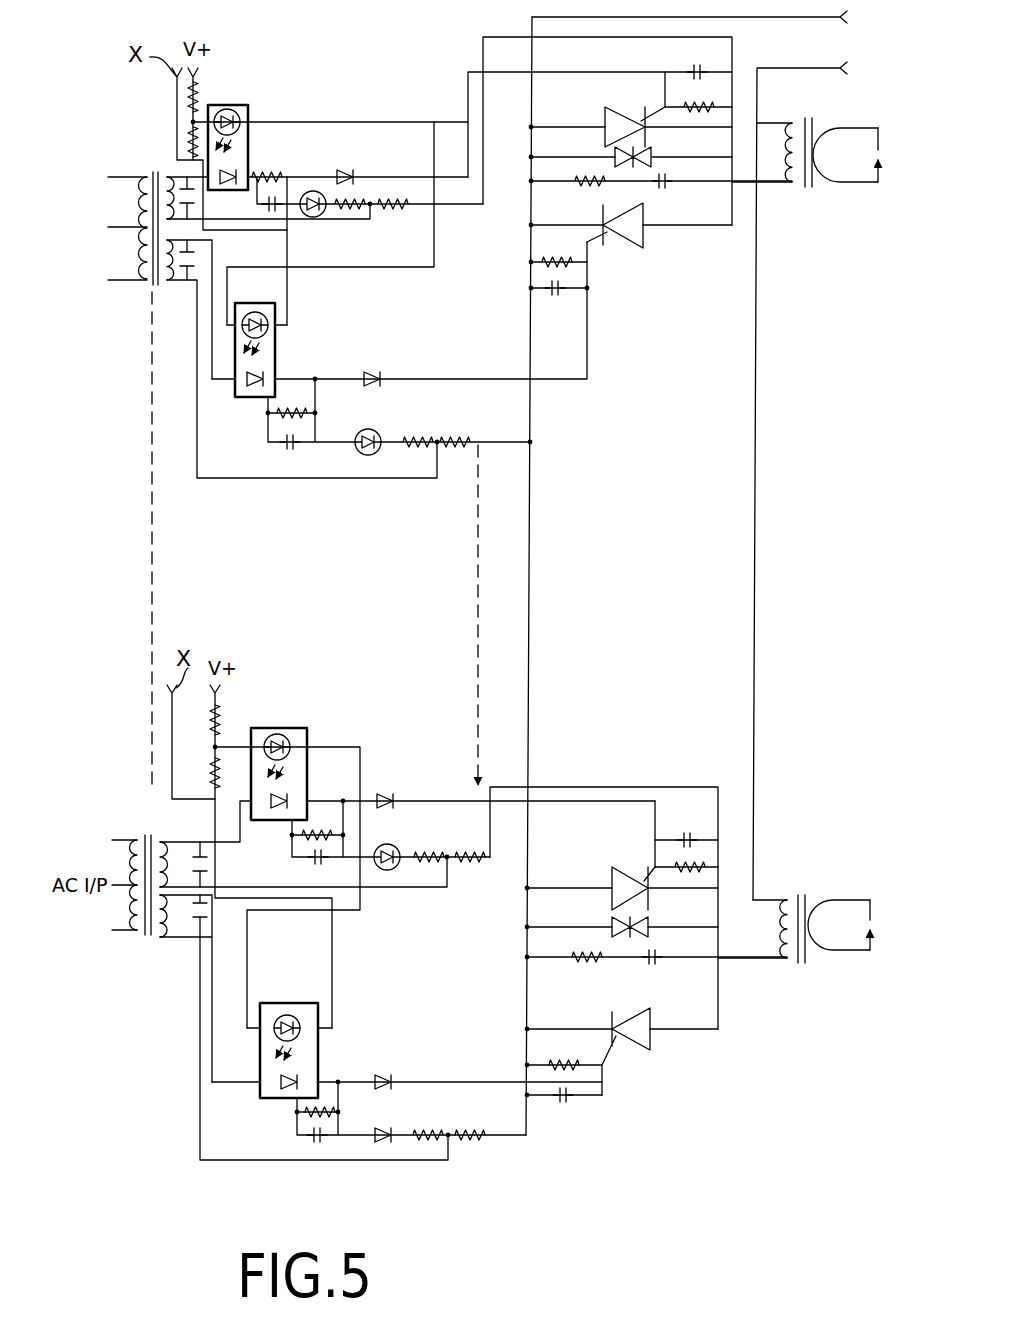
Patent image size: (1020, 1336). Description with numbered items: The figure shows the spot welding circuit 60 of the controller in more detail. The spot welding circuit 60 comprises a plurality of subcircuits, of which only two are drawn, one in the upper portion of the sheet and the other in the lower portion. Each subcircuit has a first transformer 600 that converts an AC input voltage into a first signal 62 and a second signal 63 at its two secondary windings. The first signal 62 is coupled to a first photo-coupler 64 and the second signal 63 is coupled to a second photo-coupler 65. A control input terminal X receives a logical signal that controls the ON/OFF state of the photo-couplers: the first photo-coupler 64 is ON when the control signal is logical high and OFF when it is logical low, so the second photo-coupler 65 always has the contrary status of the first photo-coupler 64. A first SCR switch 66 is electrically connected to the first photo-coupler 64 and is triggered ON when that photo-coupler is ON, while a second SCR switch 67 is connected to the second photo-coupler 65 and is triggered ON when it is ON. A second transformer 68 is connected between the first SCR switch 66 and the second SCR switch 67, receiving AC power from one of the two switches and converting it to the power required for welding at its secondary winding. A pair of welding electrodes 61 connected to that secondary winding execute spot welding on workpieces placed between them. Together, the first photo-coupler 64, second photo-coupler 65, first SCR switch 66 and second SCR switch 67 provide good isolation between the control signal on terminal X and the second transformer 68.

The spot welding circuit 60 is at (679, 573).
The welding electrodes 61 is at (880, 149).
The first signal 62 is at (178, 177).
The second signal 63 is at (180, 280).
The first photo-coupler 64 is at (233, 192).
The second photo-coupler 65 is at (279, 358).
The first SCR switch 66 is at (625, 107).
The second SCR switch 67 is at (632, 246).
The second transformer 68 is at (808, 188).
The first transformer 600 is at (112, 265).